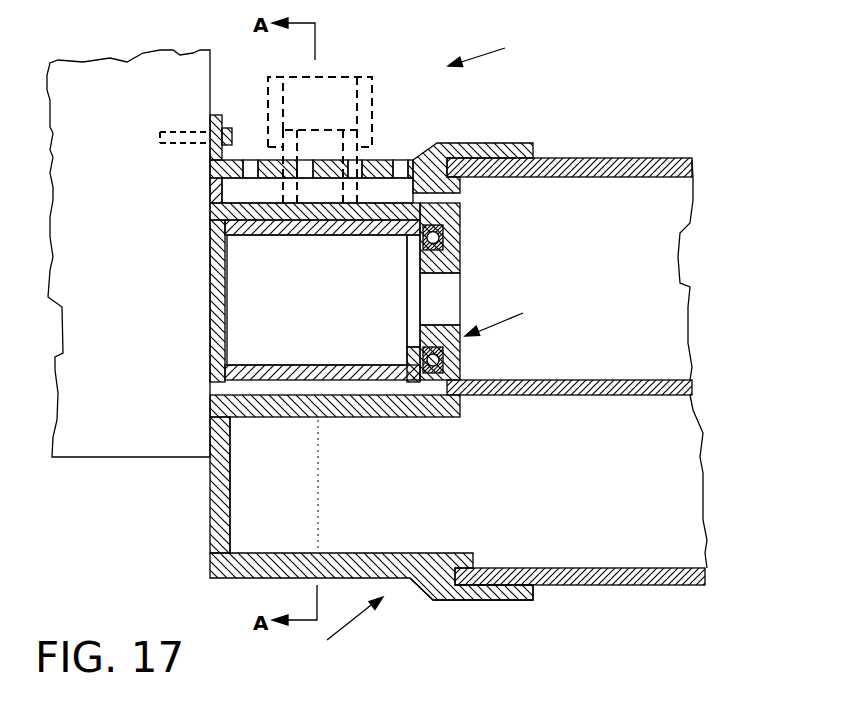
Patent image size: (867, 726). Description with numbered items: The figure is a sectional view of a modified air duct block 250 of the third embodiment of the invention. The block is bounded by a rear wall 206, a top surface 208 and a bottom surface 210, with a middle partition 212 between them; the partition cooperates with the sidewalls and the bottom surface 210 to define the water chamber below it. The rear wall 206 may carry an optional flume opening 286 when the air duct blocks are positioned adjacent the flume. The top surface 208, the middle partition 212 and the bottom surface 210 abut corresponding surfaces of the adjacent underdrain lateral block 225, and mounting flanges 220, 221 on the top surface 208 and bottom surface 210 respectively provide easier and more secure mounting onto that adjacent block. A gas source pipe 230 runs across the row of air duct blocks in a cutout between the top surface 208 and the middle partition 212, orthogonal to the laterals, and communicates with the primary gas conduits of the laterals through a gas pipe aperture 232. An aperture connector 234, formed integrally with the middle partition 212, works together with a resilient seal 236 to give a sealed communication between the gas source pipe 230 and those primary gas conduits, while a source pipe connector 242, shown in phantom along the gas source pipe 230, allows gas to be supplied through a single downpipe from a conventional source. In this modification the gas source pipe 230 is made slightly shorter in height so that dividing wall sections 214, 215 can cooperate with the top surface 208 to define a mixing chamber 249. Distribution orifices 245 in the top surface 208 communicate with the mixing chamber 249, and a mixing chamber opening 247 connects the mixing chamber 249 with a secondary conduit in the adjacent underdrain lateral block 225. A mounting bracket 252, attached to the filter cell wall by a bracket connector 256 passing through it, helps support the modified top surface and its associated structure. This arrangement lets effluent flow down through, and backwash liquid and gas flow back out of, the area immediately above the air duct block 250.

The rear wall 206 is at (230, 443).
The top surface 208 is at (437, 142).
The bottom surface 210 is at (408, 553).
The middle partition 212 is at (347, 403).
The dividing wall section 214 is at (213, 228).
The dividing wall section 215 is at (210, 192).
The mounting flange 220 is at (533, 157).
The mounting flange 221 is at (515, 598).
The underdrain lateral block 225 is at (635, 162).
The gas source pipe 230 is at (302, 236).
The gas pipe aperture 232 is at (407, 268).
The aperture connector 234 is at (488, 345).
The resilient seal 236 is at (443, 240).
The source pipe connector 242 is at (368, 78).
The distribution orifices 245 is at (408, 160).
The mixing chamber opening 247 is at (460, 200).
The mixing chamber 249 is at (422, 199).
The air duct block 250 is at (417, 352).
The mounting bracket 252 is at (210, 122).
The bracket connector 256 is at (227, 128).
The flume opening 286 is at (230, 462).